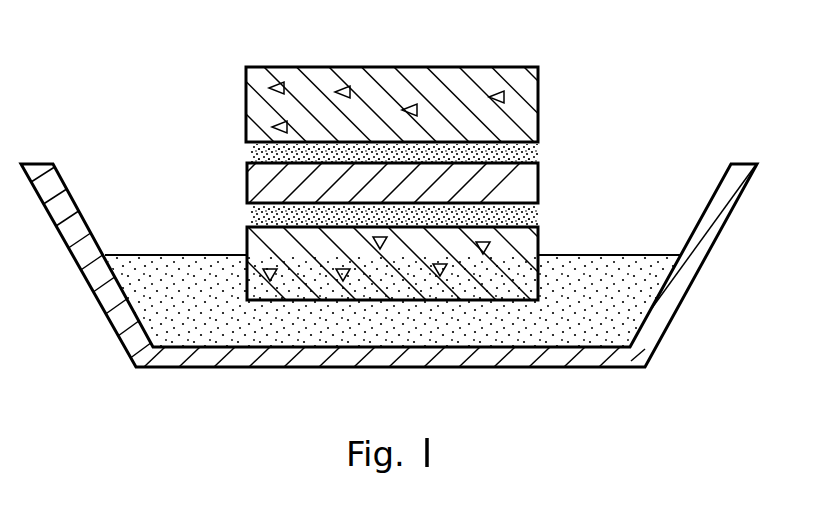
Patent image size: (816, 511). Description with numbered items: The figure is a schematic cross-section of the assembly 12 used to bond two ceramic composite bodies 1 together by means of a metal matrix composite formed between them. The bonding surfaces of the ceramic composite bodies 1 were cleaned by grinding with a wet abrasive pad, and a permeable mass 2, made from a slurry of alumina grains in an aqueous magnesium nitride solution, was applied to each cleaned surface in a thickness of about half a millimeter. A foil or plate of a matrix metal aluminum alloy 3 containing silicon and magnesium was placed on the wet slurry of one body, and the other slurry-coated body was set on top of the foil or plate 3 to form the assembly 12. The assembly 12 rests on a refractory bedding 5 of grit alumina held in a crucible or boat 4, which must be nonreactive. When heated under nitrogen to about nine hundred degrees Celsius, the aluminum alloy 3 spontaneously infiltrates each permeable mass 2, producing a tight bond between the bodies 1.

The ceramic composite bodies 1 is at (595, 45).
The permeable mass 2 is at (253, 152).
The matrix metal aluminum alloy foil or plate 3 is at (538, 180).
The crucible or boat 4 is at (706, 256).
The refractory bedding 5 is at (627, 305).
The assembly 12 is at (438, 58).